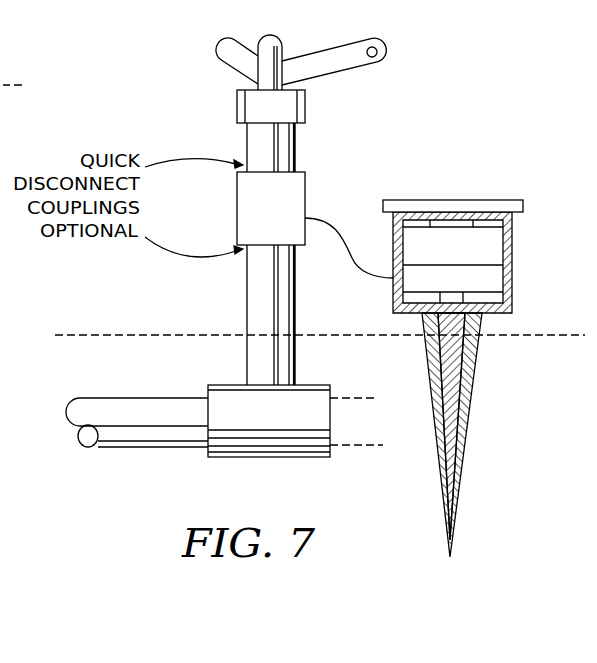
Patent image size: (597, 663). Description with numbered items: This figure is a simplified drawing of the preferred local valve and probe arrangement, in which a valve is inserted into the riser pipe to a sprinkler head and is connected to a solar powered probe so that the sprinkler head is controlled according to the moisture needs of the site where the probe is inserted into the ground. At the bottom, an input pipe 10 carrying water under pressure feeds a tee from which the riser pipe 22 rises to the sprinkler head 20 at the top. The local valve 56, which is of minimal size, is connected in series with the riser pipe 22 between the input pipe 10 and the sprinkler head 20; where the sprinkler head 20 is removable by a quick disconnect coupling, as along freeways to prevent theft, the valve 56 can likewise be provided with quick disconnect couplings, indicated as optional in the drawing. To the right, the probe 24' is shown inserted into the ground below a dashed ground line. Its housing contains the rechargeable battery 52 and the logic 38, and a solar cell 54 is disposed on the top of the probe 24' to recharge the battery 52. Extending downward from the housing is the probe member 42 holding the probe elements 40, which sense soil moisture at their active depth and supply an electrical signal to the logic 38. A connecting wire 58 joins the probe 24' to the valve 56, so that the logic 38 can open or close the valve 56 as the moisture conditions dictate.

The input pipe 10 is at (140, 397).
The sprinkler head 20 is at (247, 76).
The riser pipe 22 is at (247, 283).
The probe 24' is at (484, 215).
The logic 38 is at (497, 272).
The probe elements 40 is at (433, 437).
The probe member 42 is at (475, 358).
The rechargeable battery 52 is at (495, 232).
The solar cell 54 is at (494, 200).
The local valve 56 is at (237, 194).
The connecting wire 58 is at (349, 254).